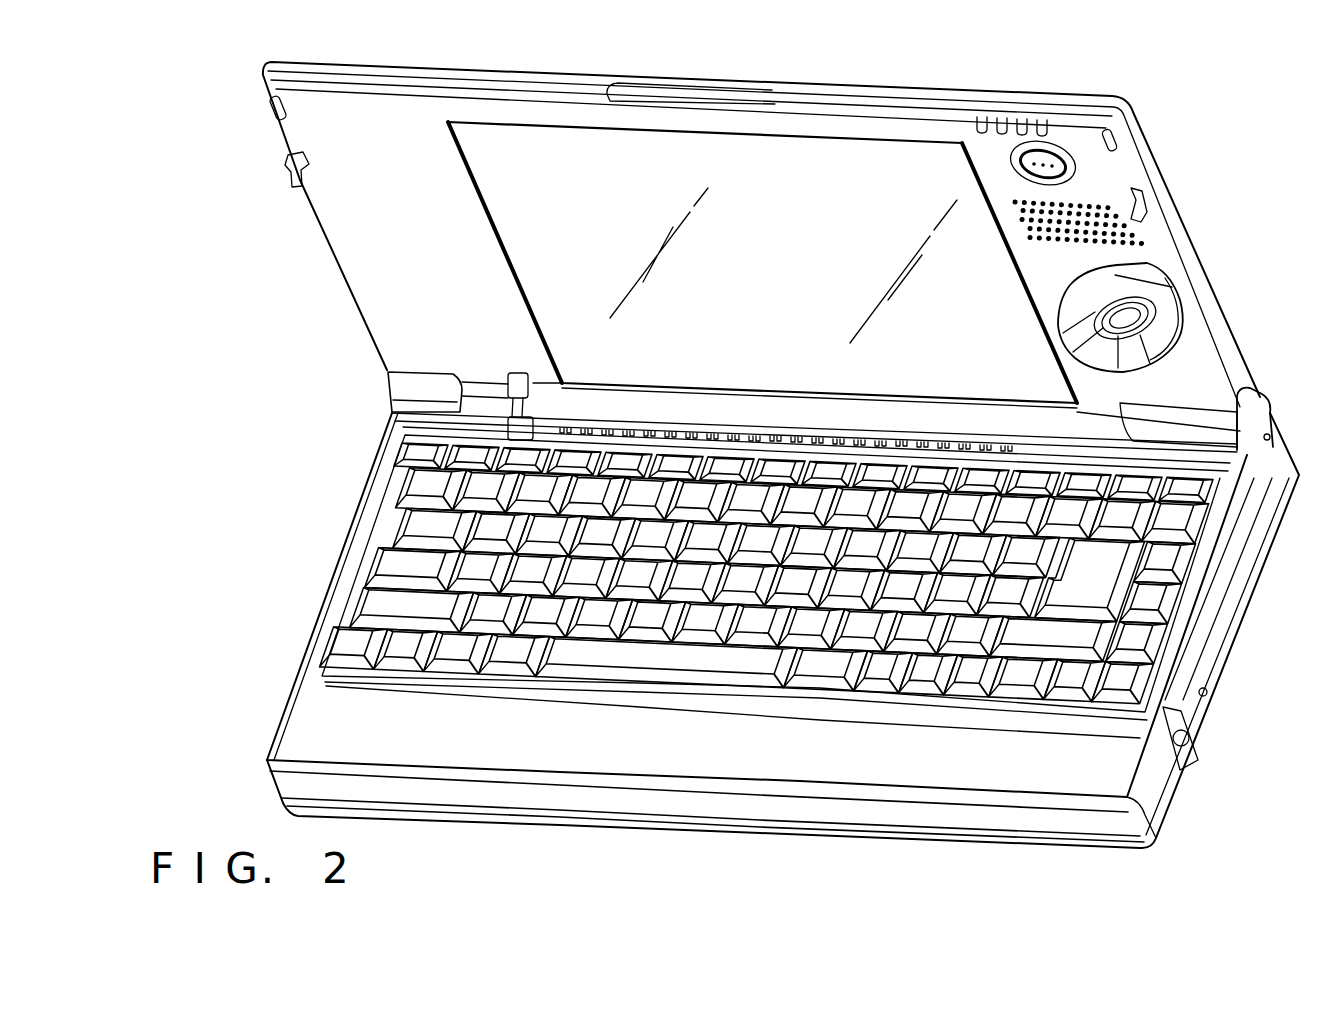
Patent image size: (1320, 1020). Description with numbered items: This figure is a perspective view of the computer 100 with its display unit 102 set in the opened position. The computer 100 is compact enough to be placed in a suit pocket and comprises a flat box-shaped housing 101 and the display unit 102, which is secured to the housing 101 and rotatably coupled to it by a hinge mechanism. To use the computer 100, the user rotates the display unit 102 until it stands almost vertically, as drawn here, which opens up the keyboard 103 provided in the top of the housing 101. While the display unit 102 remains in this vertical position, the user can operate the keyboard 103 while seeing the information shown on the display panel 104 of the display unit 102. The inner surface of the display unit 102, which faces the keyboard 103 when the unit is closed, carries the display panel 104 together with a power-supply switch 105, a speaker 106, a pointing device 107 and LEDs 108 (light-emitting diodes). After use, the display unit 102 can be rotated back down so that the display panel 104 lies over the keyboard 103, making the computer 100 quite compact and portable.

The computer 100 is at (1153, 142).
The housing 101 is at (279, 729).
The display unit 102 is at (359, 266).
The keyboard 103 is at (373, 598).
The display panel 104 is at (815, 138).
The power-supply switch 105 is at (1076, 168).
The speaker 106 is at (1143, 233).
The pointing device 107 is at (1153, 303).
The LEDs 108 is at (1040, 110).